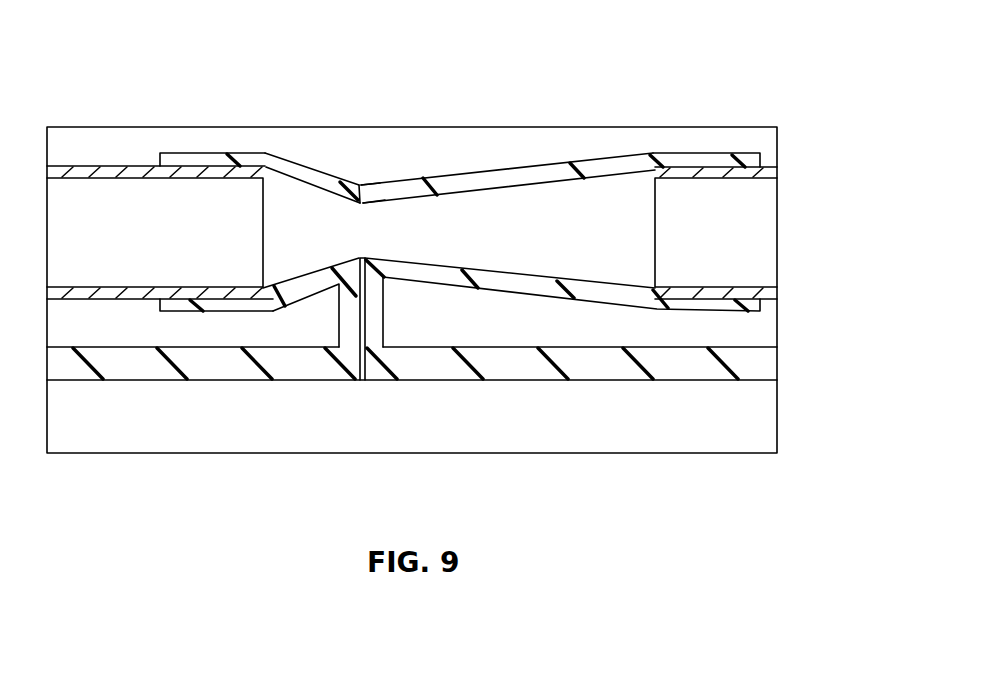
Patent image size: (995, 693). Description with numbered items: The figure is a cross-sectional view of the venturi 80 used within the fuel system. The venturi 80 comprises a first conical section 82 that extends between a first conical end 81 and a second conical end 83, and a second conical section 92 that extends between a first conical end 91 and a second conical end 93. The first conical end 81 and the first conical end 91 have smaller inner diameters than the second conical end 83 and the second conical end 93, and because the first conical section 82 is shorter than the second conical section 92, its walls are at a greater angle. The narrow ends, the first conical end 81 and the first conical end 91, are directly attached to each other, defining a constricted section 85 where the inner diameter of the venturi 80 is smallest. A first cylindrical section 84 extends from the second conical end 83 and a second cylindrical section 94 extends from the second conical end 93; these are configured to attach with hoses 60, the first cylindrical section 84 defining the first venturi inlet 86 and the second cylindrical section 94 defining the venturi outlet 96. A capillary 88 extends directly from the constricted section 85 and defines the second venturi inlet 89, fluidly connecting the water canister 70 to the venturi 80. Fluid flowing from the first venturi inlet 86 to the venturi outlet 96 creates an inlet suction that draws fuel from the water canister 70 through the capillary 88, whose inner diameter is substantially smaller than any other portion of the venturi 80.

The hose 60 is at (98, 167).
The water canister 70 is at (760, 347).
The venturi 80 is at (708, 52).
The first conical end 81 is at (360, 232).
The first conical section 82 is at (322, 173).
The second conical end 83 is at (278, 153).
The first cylindrical section 84 is at (227, 154).
The constricted section 85 is at (366, 188).
The first venturi inlet 86 is at (173, 167).
The capillary 88 is at (383, 323).
The second venturi inlet 89 is at (360, 380).
The first conical end 91 is at (375, 186).
The second conical section 92 is at (535, 167).
The second conical end 93 is at (647, 153).
The second cylindrical section 94 is at (722, 153).
The venturi outlet 96 is at (738, 298).